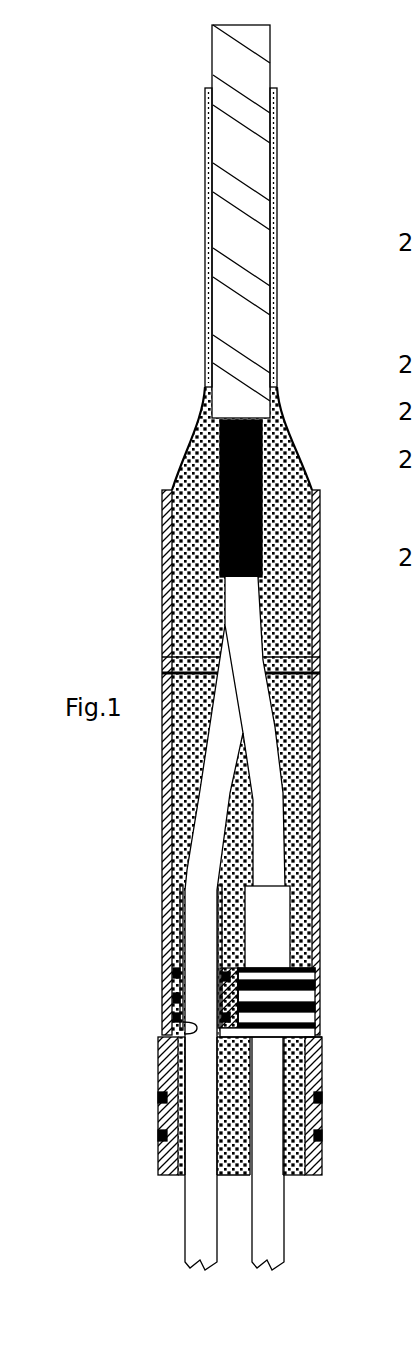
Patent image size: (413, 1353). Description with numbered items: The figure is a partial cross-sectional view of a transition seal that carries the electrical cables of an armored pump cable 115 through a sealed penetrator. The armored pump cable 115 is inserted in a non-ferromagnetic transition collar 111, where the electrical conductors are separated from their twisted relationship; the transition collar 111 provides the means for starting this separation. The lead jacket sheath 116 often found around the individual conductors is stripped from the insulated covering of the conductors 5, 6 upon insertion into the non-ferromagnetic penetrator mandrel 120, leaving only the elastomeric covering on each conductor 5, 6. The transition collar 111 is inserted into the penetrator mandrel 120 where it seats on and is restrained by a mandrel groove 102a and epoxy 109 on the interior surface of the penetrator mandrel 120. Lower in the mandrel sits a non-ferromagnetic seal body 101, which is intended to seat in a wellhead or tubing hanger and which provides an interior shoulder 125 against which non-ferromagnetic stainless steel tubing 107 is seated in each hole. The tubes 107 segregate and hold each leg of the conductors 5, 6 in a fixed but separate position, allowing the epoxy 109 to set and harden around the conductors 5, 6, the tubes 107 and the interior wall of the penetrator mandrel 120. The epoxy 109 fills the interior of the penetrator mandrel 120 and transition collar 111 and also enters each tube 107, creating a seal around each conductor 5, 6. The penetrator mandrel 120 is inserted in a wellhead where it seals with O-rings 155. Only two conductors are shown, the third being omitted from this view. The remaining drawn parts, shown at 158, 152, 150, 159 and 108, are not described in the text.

The armored pump cable 115 is at (258, 160).
The transition collar 111 is at (188, 440).
The lead jacket sheath 116 is at (262, 505).
The penetrator mandrel 120 is at (162, 578).
The mandrel groove 102a is at (225, 660).
The epoxy 109 is at (297, 702).
The electrical conductor 6 is at (202, 818).
The electrical conductor 5 is at (275, 828).
The tubing 107 is at (227, 918).
The cover 158 is at (305, 965).
The seal body 101 is at (315, 970).
The layers 152 is at (317, 1018).
The contact elements 150 is at (180, 1017).
The base plate 159 is at (305, 1033).
The interior shoulder 125 is at (165, 1037).
The sleeve 108 is at (310, 1045).
The O-rings 155 is at (160, 1135).